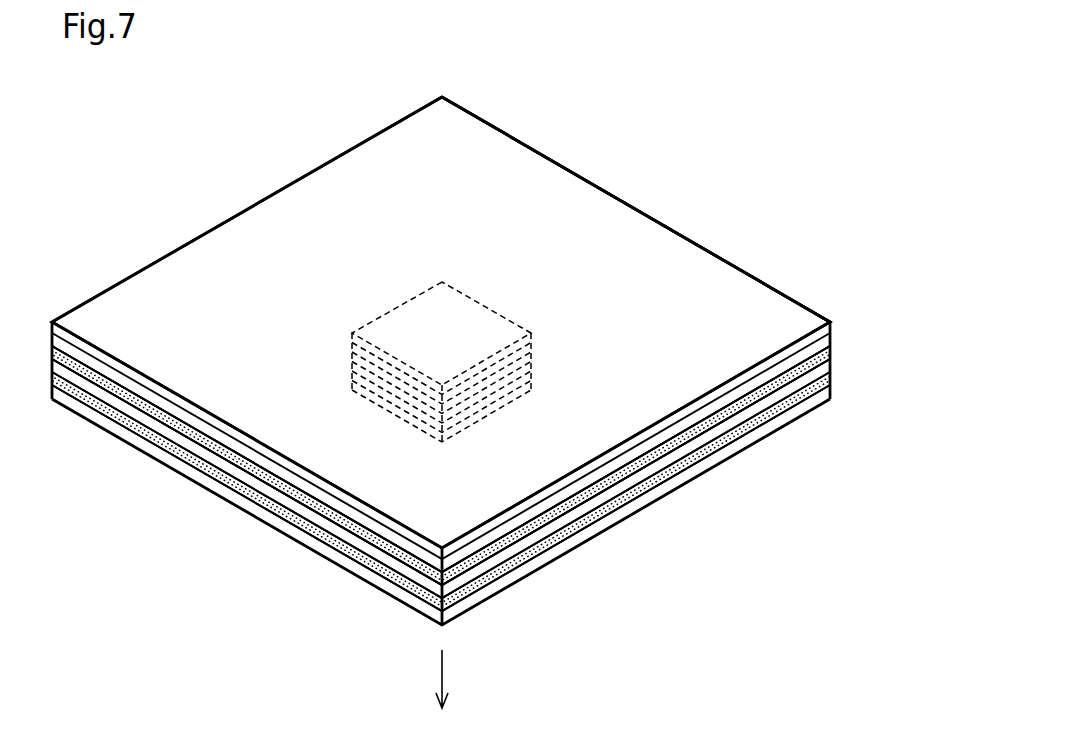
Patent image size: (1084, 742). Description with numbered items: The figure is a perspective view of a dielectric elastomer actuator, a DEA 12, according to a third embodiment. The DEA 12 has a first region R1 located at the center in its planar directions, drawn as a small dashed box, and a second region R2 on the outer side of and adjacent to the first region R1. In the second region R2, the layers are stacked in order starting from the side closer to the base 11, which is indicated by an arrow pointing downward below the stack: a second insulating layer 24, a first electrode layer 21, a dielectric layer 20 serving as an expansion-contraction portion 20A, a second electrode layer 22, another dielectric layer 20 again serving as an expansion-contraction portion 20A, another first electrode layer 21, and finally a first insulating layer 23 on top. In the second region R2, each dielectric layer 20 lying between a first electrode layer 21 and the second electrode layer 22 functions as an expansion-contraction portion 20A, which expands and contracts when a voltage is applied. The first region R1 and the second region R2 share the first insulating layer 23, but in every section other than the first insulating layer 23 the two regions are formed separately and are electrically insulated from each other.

The DEA 12 is at (735, 154).
The first insulating layer 23 is at (761, 292).
The second insulating layer 24 is at (768, 439).
The first electrode layer 21 is at (832, 337).
The dielectric layer 20 is at (832, 350).
The expansion-contraction portion 20A is at (502, 460).
The second electrode layer 22 is at (832, 363).
The base 11 is at (440, 695).
The first region R1 is at (476, 316).
The second region R2 is at (508, 148).